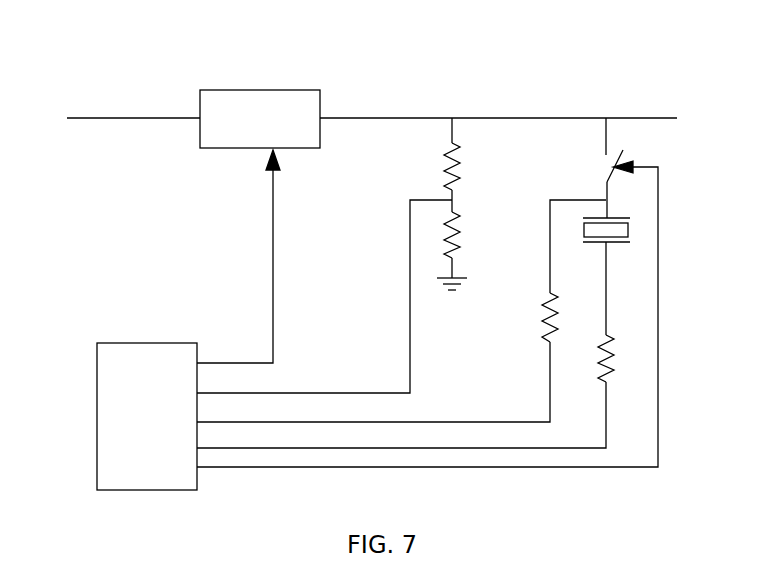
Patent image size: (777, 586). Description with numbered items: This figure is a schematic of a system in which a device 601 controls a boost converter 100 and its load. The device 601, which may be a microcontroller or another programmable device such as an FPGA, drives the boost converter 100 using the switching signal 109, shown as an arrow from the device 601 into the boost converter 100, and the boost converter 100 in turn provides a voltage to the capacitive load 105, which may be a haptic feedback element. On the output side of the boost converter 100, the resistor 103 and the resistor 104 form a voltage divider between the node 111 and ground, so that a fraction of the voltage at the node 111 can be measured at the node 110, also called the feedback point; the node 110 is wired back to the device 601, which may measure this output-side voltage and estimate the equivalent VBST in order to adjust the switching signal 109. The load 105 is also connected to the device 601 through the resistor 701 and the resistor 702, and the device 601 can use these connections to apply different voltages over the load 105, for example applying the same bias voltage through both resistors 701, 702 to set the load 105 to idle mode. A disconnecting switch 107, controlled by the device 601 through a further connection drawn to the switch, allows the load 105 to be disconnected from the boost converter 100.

The boost converter 100 is at (258, 88).
The node 111 is at (428, 118).
The resistor 103 is at (455, 152).
The resistor 104 is at (458, 228).
The node 110 is at (410, 200).
The switching signal 109 is at (273, 224).
The device 601 is at (97, 376).
The resistor 702 is at (547, 328).
The resistor 701 is at (608, 338).
The disconnecting switch 107 is at (620, 150).
The capacitive load 105 is at (630, 230).